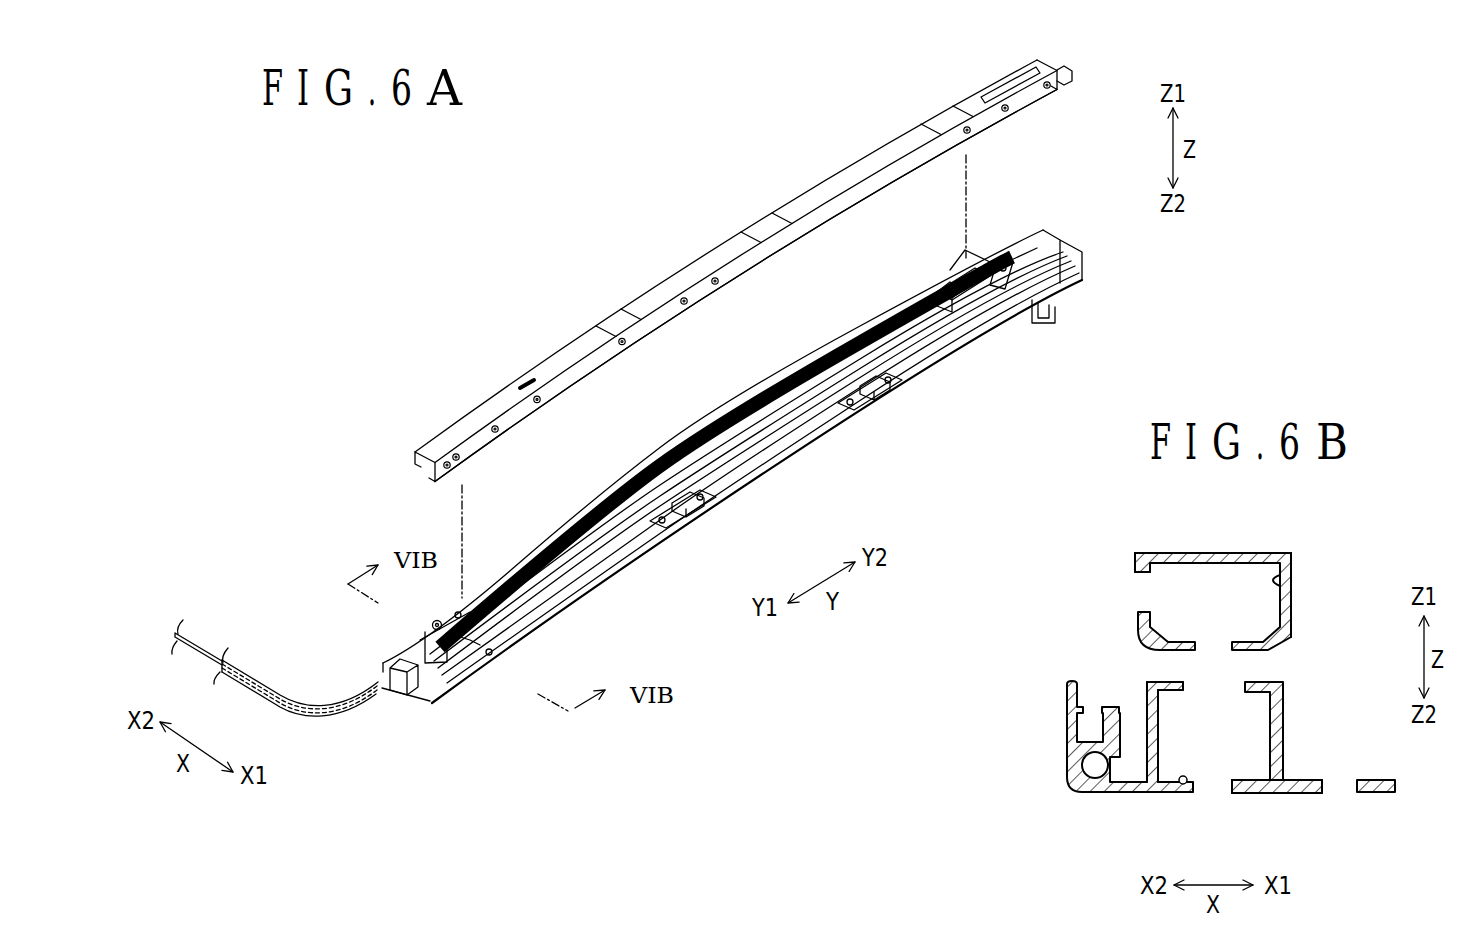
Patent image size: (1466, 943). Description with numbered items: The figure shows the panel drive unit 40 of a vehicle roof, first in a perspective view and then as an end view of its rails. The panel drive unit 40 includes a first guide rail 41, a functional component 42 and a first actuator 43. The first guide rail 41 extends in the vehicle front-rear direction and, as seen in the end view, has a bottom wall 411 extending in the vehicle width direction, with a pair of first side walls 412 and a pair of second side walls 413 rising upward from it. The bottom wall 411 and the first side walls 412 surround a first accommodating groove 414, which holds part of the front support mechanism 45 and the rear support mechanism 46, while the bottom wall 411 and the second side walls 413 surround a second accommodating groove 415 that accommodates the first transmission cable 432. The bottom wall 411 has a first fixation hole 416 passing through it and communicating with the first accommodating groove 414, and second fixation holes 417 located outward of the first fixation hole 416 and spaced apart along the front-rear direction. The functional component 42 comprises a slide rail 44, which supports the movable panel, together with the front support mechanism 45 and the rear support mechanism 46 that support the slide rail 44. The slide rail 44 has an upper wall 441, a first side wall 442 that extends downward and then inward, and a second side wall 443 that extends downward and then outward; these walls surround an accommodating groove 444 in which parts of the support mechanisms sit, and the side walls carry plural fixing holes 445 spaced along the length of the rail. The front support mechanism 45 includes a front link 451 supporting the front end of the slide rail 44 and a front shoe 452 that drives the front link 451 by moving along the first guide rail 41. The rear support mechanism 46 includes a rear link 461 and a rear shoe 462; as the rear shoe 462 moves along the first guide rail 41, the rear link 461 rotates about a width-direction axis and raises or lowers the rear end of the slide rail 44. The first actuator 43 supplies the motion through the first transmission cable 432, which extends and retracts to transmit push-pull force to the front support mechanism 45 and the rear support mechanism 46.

In FIG. 6A, the panel drive unit 40 is at (486, 254).
In FIG. 6A, the first guide rail 41 is at (963, 359).
In FIG. 6B, the first guide rail 41 is at (1070, 788).
In FIG. 6A, the bottom wall 411 is at (607, 577).
In FIG. 6B, the bottom wall 411 is at (1308, 795).
In FIG. 6A, the first side wall 412 is at (770, 445).
In FIG. 6B, the first side wall 412 is at (1147, 694).
In FIG. 6B, the second side wall 413 is at (1067, 716).
In FIG. 6B, the first accommodating groove 414 is at (1184, 784).
In FIG. 6B, the second accommodating groove 415 is at (1094, 778).
In FIG. 6B, the first fixation hole 416 is at (1232, 787).
In FIG. 6A, the second fixation hole 417 is at (884, 390).
In FIG. 6B, the second fixation hole 417 is at (1358, 787).
In FIG. 6A, the functional component 42 is at (866, 156).
In FIG. 6A, the first actuator 43 is at (368, 737).
In FIG. 6A, the first transmission cable 432 is at (203, 646).
In FIG. 6A, the slide rail 44 is at (620, 308).
In FIG. 6B, the slide rail 44 is at (1259, 551).
In FIG. 6B, the upper wall 441 is at (1212, 552).
In FIG. 6A, the first side wall 442 is at (828, 214).
In FIG. 6B, the first side wall 442 is at (1292, 598).
In FIG. 6B, the second side wall 443 is at (1135, 558).
In FIG. 6B, the accommodating groove 444 is at (1273, 577).
In FIG. 6A, the fixing hole 445 is at (969, 127).
In FIG. 6B, the fixing hole 445 is at (1146, 612).
In FIG. 6A, the front support mechanism 45 is at (514, 565).
In FIG. 6A, the front link 451 is at (432, 624).
In FIG. 6A, the front shoe 452 is at (485, 612).
In FIG. 6A, the rear support mechanism 46 is at (977, 254).
In FIG. 6A, the rear link 461 is at (1072, 287).
In FIG. 6A, the rear shoe 462 is at (1003, 292).